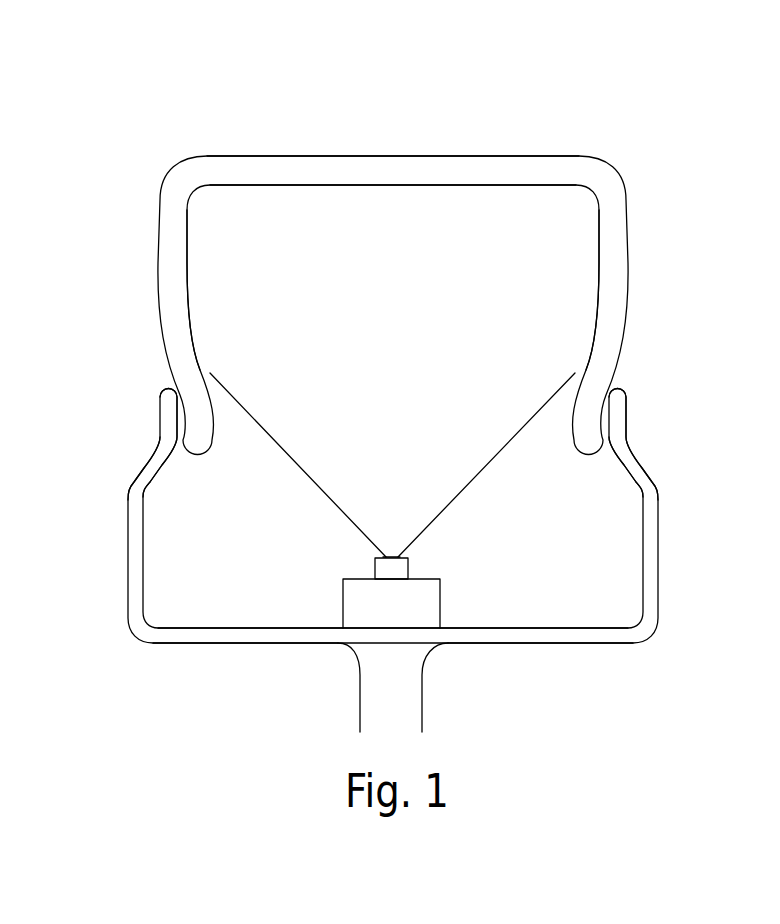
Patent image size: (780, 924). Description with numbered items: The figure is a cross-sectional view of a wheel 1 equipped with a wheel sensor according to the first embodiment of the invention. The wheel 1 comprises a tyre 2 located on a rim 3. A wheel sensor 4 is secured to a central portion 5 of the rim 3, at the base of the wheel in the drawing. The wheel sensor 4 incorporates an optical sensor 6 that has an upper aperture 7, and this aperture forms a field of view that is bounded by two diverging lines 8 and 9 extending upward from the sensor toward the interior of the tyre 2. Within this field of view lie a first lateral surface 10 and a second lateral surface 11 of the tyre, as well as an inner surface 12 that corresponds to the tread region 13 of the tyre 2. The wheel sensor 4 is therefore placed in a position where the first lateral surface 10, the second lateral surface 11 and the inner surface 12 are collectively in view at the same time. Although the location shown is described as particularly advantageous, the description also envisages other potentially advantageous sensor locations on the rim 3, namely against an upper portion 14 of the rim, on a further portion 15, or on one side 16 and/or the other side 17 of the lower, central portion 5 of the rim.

The wheel 1 is at (611, 85).
The tyre 2 is at (613, 325).
The rim 3 is at (650, 588).
The wheel sensor 4 is at (417, 609).
The central portion of rim 5 is at (281, 631).
The optical sensor 6 is at (412, 562).
The upper aperture 7 is at (385, 557).
The field of view line 8 is at (303, 473).
The field of view line 9 is at (493, 463).
The first lateral surface 10 is at (190, 270).
The second lateral surface 11 is at (600, 238).
The inner surface 12 is at (400, 183).
The tread region 13 is at (243, 153).
The upper portion of rim 14 is at (140, 563).
The portion of rim 15 is at (642, 523).
The side of lower portion of rim 16 is at (212, 633).
The side of lower portion of rim 17 is at (592, 635).